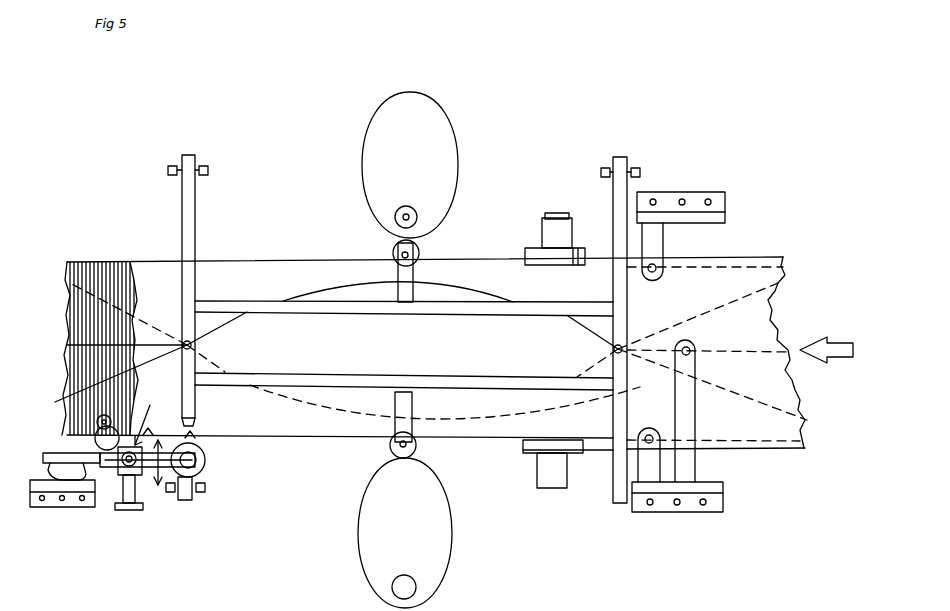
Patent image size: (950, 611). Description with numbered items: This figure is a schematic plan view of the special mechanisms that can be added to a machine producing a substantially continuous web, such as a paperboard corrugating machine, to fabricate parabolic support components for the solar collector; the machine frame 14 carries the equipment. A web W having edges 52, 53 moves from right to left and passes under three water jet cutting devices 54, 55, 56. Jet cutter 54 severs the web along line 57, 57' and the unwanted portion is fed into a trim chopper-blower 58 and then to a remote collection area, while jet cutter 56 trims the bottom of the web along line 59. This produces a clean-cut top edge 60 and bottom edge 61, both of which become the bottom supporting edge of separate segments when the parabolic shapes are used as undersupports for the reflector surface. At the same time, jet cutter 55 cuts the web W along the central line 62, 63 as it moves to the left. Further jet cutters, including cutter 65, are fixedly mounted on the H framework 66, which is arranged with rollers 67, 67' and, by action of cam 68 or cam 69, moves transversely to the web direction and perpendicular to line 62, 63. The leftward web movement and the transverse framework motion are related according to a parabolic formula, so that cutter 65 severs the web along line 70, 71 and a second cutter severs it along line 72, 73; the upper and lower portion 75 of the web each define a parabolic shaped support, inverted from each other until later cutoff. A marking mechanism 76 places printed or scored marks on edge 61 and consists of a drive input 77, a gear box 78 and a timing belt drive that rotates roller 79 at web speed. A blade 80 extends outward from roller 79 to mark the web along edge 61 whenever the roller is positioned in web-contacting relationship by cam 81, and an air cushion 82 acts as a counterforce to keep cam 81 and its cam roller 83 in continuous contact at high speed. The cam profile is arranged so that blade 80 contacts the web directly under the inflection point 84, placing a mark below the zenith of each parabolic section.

The machine frame 14 is at (512, 280).
The web edge 52 is at (737, 250).
The web edge 53 is at (750, 453).
The water jet cutting device 54 is at (655, 265).
The water jet cutting device 55 is at (689, 348).
The water jet cutting device 56 is at (647, 436).
The cutting line 57 is at (728, 265).
The cutting line 57' is at (604, 330).
The trim chopper-blower 58 is at (532, 253).
The cutting line 59 is at (808, 444).
The top edge 60 is at (302, 259).
The bottom edge 61 is at (303, 438).
The cutting line 62 is at (753, 353).
The cutting line 63 is at (82, 333).
The jet cutter 65 is at (180, 340).
The H framework 66 is at (192, 218).
The roller 67 is at (166, 154).
The roller 67' is at (215, 154).
The cam 68 is at (435, 128).
The cam 69 is at (435, 548).
The cutting line 70 is at (65, 395).
The cutting line 71 is at (806, 410).
The cutting line 72 is at (68, 278).
The cutting line 73 is at (790, 290).
The lower portion 75 is at (482, 423).
The marking mechanism 76 is at (165, 500).
The drive input 77 is at (133, 512).
The gear box 78 is at (150, 434).
The roller 79 is at (208, 459).
The blade 80 is at (191, 428).
The cam 81 is at (95, 441).
The air cushion 82 is at (55, 505).
The cam roller 83 is at (110, 475).
The inflection point 84 is at (205, 348).
The web W is at (757, 333).